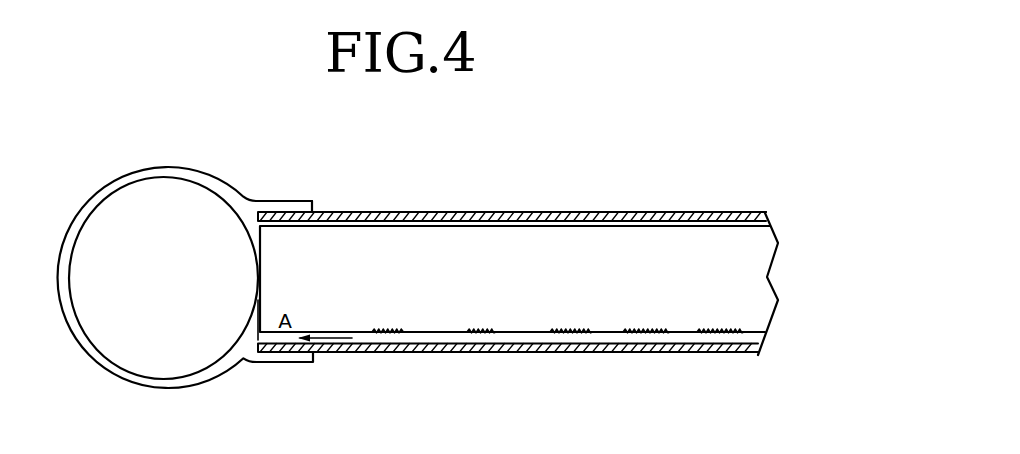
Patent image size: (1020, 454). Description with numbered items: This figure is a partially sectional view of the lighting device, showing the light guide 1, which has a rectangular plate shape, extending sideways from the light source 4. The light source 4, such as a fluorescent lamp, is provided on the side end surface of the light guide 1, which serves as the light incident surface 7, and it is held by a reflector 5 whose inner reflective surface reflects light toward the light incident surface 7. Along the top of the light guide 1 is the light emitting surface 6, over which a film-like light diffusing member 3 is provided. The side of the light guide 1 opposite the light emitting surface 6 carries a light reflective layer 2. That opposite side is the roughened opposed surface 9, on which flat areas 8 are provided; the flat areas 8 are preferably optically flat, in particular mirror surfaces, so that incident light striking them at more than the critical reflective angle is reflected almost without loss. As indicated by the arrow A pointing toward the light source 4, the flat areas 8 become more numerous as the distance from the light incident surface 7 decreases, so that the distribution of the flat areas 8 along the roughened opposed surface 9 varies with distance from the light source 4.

The light guide 1 is at (593, 248).
The light reflective layer 2 is at (690, 353).
The light diffusing member 3 is at (370, 211).
The light source 4 is at (197, 342).
The reflector 5 is at (152, 388).
The light emitting surface 6 is at (712, 211).
The light incident surface 7 is at (247, 347).
The flat areas 8 is at (369, 333).
The roughened opposed surface 9 is at (765, 337).